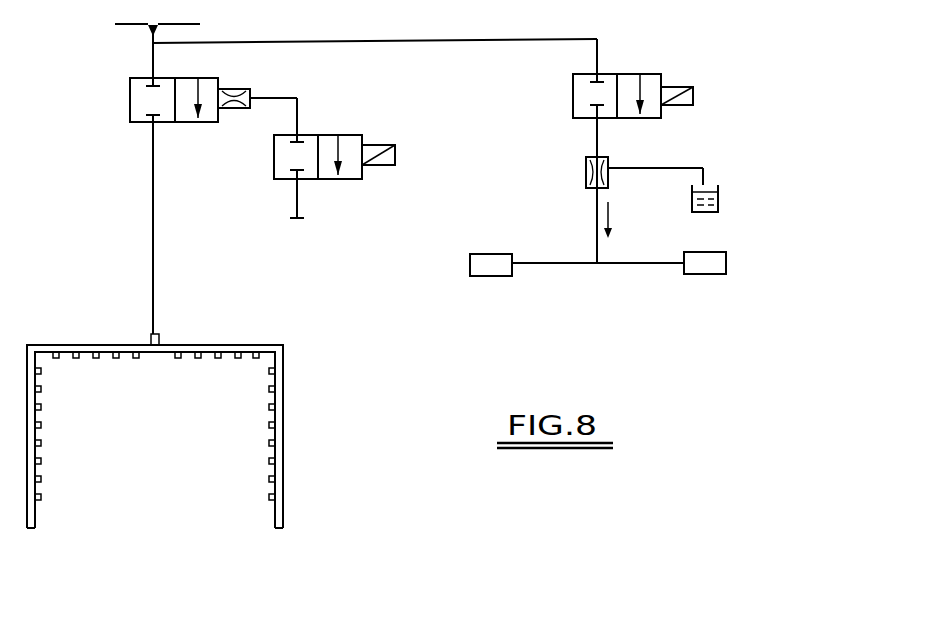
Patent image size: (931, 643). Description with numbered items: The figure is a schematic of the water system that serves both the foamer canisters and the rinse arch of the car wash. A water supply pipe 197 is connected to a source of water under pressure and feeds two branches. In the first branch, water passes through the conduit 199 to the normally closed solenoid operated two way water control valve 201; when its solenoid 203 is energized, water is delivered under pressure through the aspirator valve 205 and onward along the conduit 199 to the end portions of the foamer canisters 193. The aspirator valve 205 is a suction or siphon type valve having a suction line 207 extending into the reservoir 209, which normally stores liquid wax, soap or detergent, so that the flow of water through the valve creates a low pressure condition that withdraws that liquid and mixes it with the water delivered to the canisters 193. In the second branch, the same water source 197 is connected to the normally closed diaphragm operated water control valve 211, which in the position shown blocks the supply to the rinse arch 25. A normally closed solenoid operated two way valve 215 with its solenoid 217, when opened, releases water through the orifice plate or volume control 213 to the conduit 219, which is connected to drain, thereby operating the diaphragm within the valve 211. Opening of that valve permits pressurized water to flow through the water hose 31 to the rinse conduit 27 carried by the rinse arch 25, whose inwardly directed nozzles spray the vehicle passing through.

The water supply pipe 197 is at (150, 31).
The conduit 199 is at (437, 40).
The diaphragm operated water control valve 211 is at (130, 108).
The orifice plate or volume control 213 is at (207, 78).
The solenoid operated two way valve 215 is at (330, 180).
The solenoid 217 is at (395, 145).
The conduit 219 is at (297, 205).
The solenoid operated two way water control valve 201 is at (573, 108).
The solenoid 203 is at (683, 107).
The aspirator valve 205 is at (586, 178).
The suction line 207 is at (675, 168).
The reservoir 209 is at (712, 212).
The foamer canisters 193 is at (488, 277).
The water hose 31 is at (153, 234).
The rinse arch 25 is at (247, 322).
The rinse conduit 27 is at (266, 348).